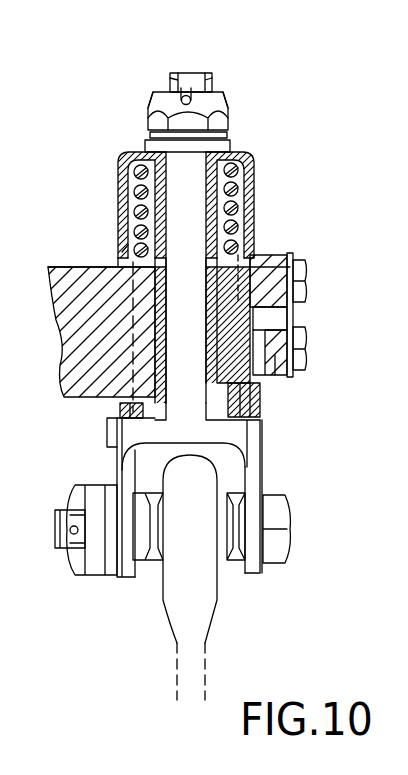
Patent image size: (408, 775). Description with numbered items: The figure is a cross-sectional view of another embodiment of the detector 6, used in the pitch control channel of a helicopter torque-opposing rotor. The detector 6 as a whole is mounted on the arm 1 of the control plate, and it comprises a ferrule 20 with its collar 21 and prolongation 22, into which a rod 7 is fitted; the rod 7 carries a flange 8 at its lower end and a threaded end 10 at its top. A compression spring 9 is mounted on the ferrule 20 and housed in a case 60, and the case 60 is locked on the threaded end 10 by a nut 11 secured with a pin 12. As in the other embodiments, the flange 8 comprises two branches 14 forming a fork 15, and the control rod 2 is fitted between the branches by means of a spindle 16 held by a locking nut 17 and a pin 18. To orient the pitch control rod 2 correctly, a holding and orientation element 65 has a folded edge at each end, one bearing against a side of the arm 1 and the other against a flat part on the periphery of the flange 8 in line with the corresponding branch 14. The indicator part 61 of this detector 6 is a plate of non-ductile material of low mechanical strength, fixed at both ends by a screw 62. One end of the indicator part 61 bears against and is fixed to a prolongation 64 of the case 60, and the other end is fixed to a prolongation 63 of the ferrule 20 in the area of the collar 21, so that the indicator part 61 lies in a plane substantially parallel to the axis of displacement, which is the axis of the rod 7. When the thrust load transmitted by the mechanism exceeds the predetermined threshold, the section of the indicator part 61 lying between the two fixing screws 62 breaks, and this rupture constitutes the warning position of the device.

The arm 1 is at (75, 318).
The control rod 2 is at (166, 602).
The detector 6 is at (259, 145).
The rod 7 is at (172, 218).
The flange 8 is at (242, 431).
The compression spring 9 is at (137, 192).
The threaded end 10 is at (196, 86).
The nut 11 is at (215, 100).
The pin 12 is at (180, 104).
The branches 14 is at (121, 470).
The fork 15 is at (262, 453).
The spindle 16 is at (240, 568).
The locking nut 17 is at (82, 568).
The pin 18 is at (58, 518).
The ferrule 20 is at (240, 265).
The collar 21 is at (140, 262).
The prolongation 22 is at (232, 203).
The case 60 is at (255, 172).
The indicator part 61 is at (293, 318).
The screw 62 is at (300, 268).
The prolongation 63 is at (275, 290).
The prolongation 64 is at (270, 365).
The holding and orientation element 65 is at (106, 437).